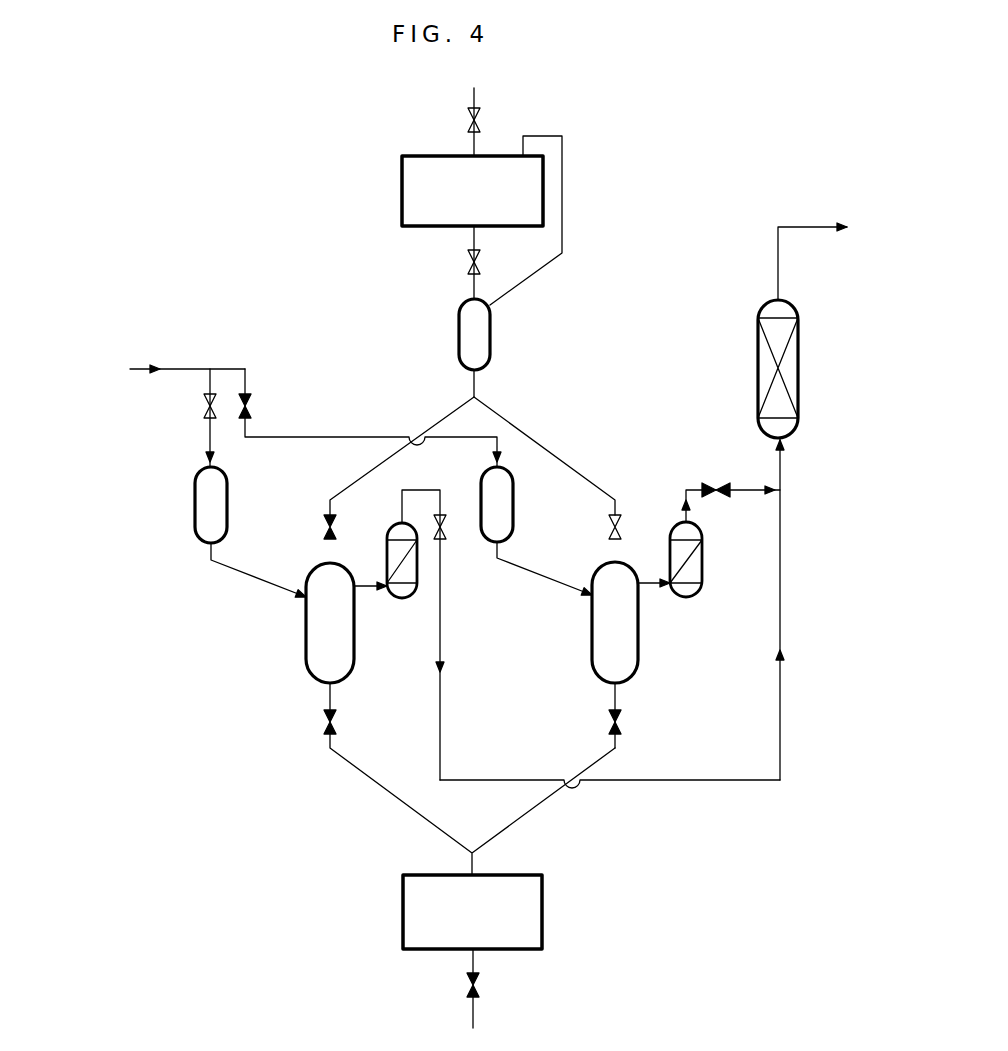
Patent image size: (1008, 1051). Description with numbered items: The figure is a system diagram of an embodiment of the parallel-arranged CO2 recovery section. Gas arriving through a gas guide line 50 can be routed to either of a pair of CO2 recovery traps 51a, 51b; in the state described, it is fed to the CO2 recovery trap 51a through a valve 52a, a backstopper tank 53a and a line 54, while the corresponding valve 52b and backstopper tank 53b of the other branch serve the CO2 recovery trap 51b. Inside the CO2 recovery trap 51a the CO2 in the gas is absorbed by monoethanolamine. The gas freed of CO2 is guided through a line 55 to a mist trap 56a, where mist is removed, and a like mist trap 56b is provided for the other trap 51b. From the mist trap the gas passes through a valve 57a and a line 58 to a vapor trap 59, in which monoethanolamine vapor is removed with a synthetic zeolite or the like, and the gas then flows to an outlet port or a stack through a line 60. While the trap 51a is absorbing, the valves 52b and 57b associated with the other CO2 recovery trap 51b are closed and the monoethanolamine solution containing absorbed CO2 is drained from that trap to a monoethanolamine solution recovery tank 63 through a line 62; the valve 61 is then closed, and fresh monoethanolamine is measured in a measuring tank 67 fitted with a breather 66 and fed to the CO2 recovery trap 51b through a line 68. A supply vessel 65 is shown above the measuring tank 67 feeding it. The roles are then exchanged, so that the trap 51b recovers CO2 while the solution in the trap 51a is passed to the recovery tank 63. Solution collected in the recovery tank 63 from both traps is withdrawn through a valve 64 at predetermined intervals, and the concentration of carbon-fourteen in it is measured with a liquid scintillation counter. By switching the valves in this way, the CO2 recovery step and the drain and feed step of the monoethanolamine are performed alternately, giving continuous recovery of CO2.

The gas guide line 50 is at (184, 369).
The CO2 recovery trap 51a is at (306, 658).
The CO2 recovery trap 51b is at (594, 660).
The valve 52a is at (204, 412).
The valve 52b is at (251, 412).
The backstopper tank 53a is at (196, 511).
The backstopper tank 53b is at (513, 503).
The line 54 is at (248, 575).
The line 55 is at (364, 590).
The mist trap 56a is at (389, 526).
The mist trap 56b is at (688, 598).
The valve 57a is at (447, 527).
The valve 57b is at (712, 485).
The line 58 is at (780, 468).
The vapor trap 59 is at (798, 373).
The line 60 is at (778, 266).
The valve 61 is at (621, 718).
The line 62 is at (538, 806).
The monoethanolamine solution recovery tank 63 is at (545, 921).
The valve 64 is at (478, 986).
The supply tank 65 is at (402, 192).
The breather 66 is at (546, 263).
The measuring tank 67 is at (459, 325).
The line 68 is at (538, 439).